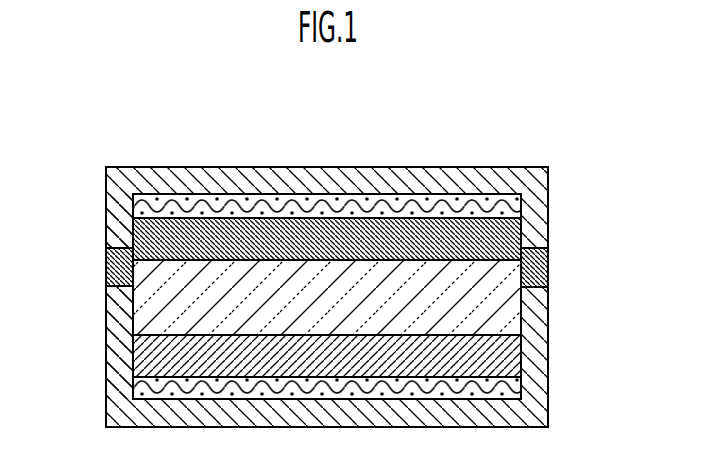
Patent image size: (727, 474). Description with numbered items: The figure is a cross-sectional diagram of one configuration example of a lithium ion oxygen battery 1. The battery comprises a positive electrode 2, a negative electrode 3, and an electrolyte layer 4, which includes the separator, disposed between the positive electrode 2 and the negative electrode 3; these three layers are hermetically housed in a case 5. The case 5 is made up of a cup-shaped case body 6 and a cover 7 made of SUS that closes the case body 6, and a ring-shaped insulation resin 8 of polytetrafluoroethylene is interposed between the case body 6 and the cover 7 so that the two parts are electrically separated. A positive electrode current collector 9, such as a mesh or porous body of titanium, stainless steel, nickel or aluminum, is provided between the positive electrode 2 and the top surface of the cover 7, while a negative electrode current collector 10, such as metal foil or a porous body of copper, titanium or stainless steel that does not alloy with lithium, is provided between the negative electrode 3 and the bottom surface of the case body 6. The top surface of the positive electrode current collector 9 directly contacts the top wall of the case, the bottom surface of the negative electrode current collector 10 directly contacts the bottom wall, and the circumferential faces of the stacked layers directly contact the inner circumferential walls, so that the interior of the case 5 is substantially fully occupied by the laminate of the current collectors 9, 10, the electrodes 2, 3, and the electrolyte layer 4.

The lithium ion oxygen battery 1 is at (342, 263).
The positive electrode 2 is at (518, 230).
The negative electrode 3 is at (518, 353).
The electrolyte layer 4 is at (515, 310).
The case 5 is at (289, 296).
The case body 6 is at (97, 342).
The cover 7 is at (104, 228).
The insulation resin 8 is at (104, 268).
The positive electrode current collector 9 is at (521, 199).
The negative electrode current collector 10 is at (515, 385).